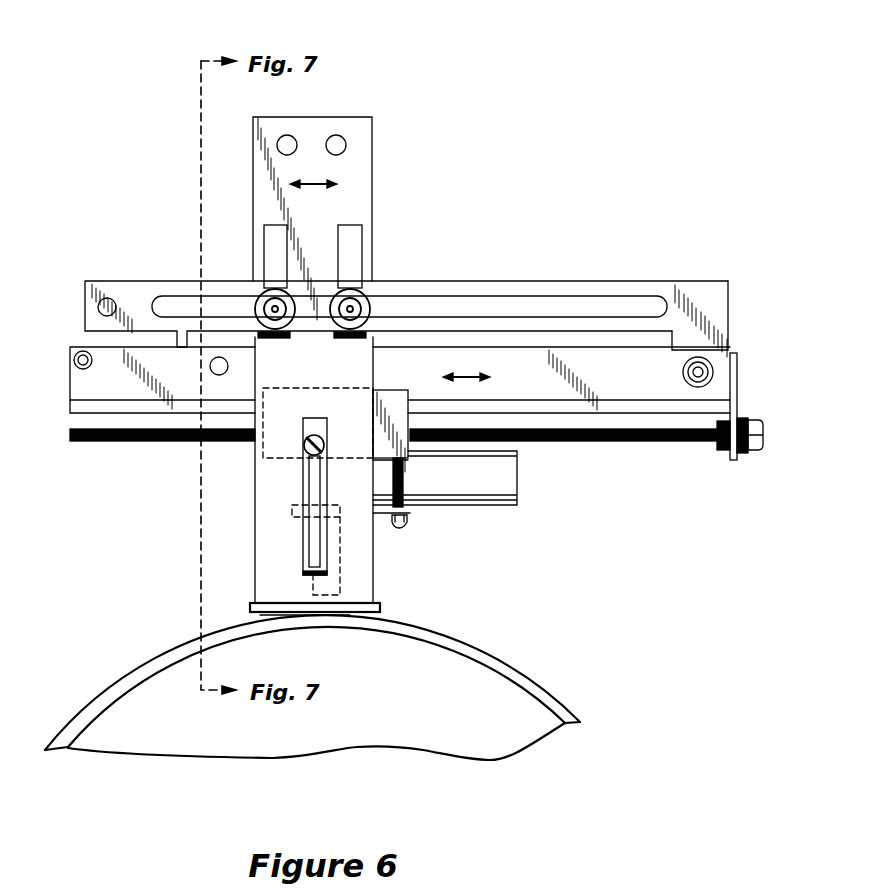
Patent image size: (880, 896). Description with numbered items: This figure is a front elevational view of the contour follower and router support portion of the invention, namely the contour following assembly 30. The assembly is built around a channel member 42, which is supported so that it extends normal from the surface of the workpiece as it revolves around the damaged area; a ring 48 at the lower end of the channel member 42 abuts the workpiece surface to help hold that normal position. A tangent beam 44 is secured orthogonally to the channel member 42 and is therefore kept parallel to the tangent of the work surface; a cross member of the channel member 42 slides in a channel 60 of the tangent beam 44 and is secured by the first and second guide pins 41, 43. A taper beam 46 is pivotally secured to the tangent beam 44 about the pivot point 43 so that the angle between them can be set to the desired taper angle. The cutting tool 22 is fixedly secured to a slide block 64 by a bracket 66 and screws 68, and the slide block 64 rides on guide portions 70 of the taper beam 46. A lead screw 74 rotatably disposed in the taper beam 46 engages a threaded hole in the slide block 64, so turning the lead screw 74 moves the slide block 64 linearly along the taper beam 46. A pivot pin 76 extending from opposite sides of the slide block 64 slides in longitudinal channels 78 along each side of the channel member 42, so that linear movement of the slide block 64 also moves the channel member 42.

The contour following assembly 30 is at (440, 161).
The channel member 42 is at (363, 135).
The first guide pin 41 is at (262, 292).
The channel 60 is at (542, 300).
The tangent beam 44 is at (713, 302).
The taper beam 46 is at (725, 393).
The pivot point 43 is at (712, 368).
The guide portions 70 is at (725, 408).
The lead screw 74 is at (655, 444).
The slide block 64 is at (398, 391).
The screws 68 is at (405, 470).
The bracket 66 is at (410, 513).
The pivot pin 76 is at (305, 442).
The channels 78 is at (305, 550).
The cutting tool 22 is at (338, 576).
The ring 48 is at (380, 606).